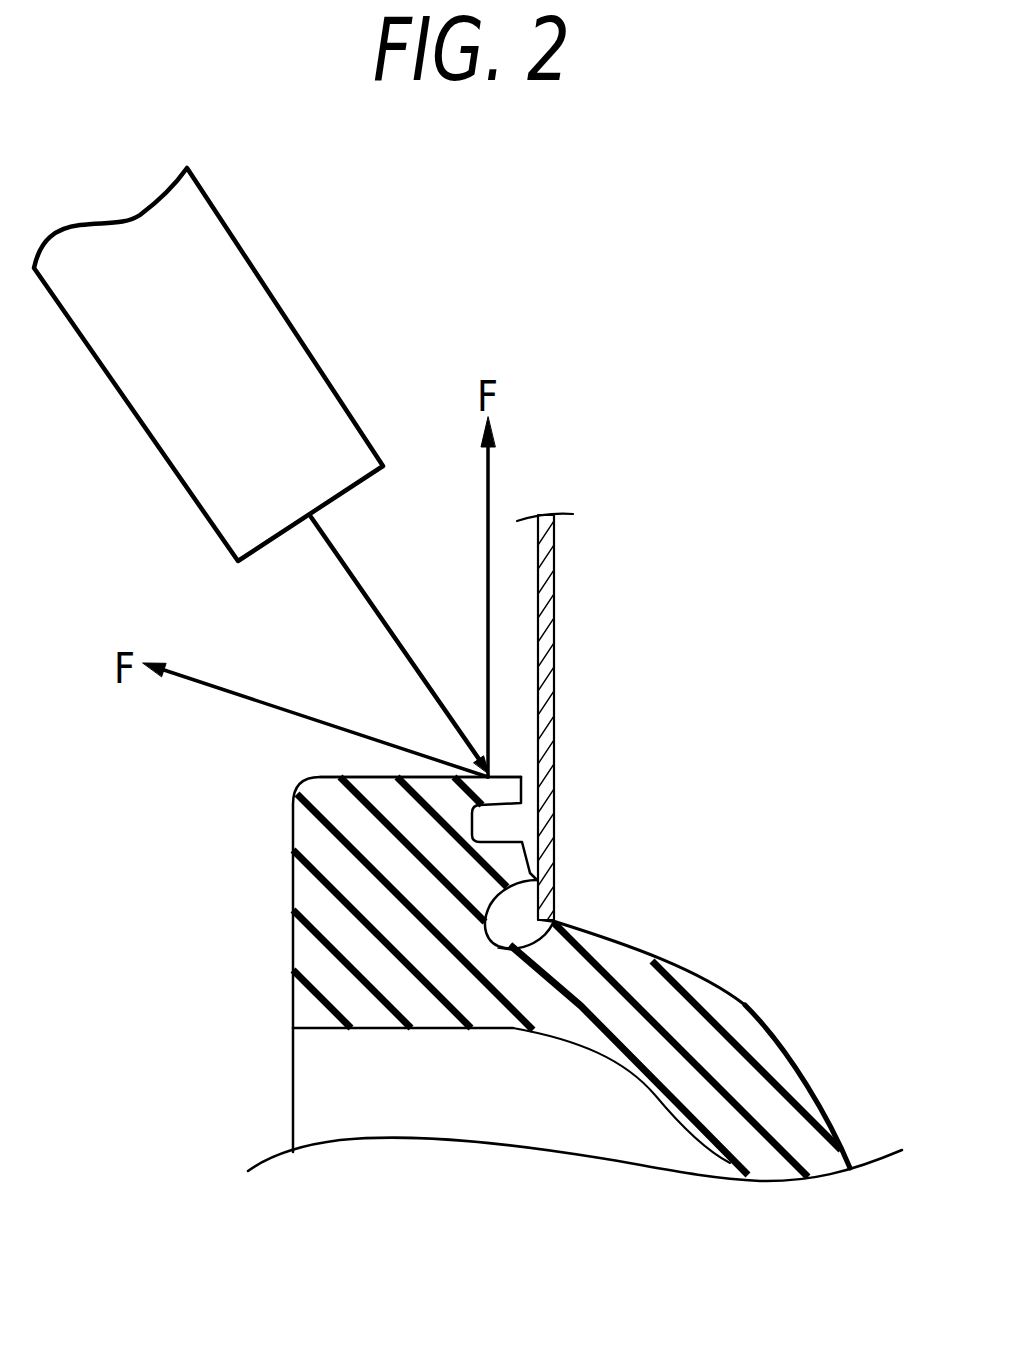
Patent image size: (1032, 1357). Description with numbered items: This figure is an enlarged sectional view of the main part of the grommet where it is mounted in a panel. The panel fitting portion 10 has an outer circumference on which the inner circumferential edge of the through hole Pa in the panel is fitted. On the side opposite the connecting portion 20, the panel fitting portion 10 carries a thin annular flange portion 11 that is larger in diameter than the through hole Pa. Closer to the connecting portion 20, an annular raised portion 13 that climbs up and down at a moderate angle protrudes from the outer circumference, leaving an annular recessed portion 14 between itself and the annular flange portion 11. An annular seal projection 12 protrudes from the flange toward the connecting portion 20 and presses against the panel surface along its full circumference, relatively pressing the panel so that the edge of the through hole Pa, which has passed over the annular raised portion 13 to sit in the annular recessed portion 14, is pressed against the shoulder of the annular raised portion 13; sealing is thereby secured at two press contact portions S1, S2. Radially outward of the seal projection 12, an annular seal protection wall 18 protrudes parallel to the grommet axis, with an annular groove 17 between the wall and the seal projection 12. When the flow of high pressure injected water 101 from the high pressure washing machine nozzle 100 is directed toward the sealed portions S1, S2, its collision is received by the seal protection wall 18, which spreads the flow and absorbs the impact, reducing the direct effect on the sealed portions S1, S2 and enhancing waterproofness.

The high pressure washing machine nozzle 100 is at (280, 311).
The flow of high pressure injected water 101 is at (386, 621).
The panel fitting portion 10 is at (272, 1003).
The annular flange portion 11 is at (293, 849).
The annular seal projection 12 is at (557, 818).
The annular raised portion 13 is at (558, 932).
The annular recessed portion 14 is at (507, 910).
The annular groove 17 is at (482, 820).
The annular seal protection wall 18 is at (506, 780).
The connecting portion 20 is at (786, 1061).
The through hole Pa is at (494, 950).
The press contact portion S1 is at (557, 845).
The press contact portion S2 is at (553, 921).